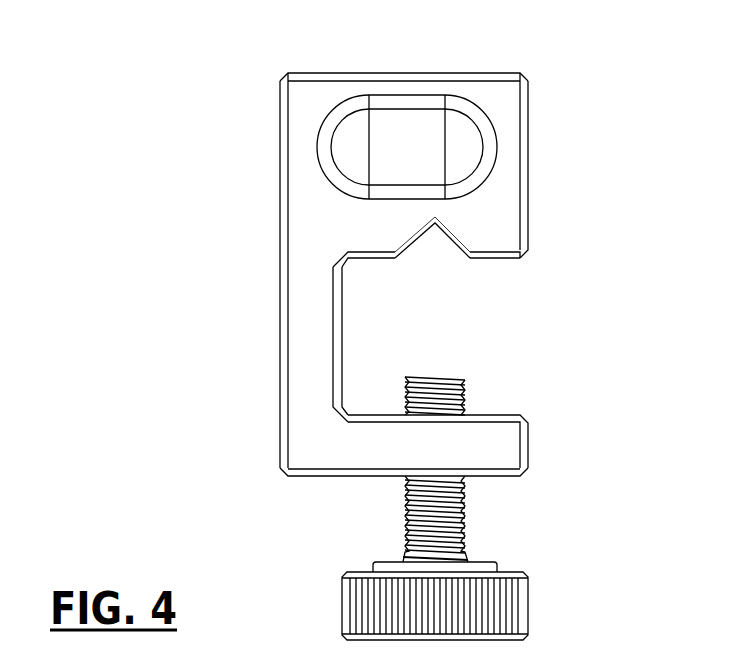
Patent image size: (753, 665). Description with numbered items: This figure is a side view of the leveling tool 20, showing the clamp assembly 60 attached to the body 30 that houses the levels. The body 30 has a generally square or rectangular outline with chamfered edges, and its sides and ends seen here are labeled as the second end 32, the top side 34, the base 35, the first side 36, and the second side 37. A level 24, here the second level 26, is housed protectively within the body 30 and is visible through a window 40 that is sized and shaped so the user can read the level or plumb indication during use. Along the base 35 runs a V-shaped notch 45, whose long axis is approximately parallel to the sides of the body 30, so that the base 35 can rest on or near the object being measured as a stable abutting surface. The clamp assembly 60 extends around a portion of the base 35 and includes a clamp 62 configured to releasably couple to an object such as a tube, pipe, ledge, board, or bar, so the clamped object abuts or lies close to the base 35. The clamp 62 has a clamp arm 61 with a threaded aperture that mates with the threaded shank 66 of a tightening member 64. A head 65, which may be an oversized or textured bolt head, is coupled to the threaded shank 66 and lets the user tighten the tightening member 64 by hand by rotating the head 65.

The leveling tool 20 is at (657, 145).
The level 24 is at (380, 140).
The second level 26 is at (380, 162).
The body 30 is at (320, 198).
The second end 32 is at (322, 97).
The top side 34 is at (487, 72).
The base 35 is at (492, 258).
The first side 36 is at (529, 198).
The second side 37 is at (280, 253).
The window 40 is at (397, 102).
The notch 45 is at (408, 250).
The clamp assembly 60 is at (195, 328).
The clamp arm 61 is at (305, 403).
The clamp 62 is at (528, 438).
The tightening member 64 is at (407, 543).
The head 65 is at (528, 620).
The threaded shank 66 is at (463, 513).